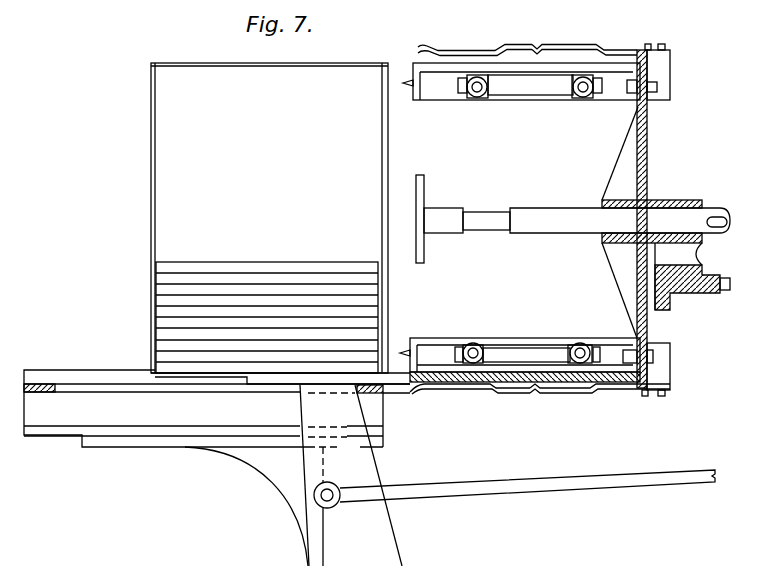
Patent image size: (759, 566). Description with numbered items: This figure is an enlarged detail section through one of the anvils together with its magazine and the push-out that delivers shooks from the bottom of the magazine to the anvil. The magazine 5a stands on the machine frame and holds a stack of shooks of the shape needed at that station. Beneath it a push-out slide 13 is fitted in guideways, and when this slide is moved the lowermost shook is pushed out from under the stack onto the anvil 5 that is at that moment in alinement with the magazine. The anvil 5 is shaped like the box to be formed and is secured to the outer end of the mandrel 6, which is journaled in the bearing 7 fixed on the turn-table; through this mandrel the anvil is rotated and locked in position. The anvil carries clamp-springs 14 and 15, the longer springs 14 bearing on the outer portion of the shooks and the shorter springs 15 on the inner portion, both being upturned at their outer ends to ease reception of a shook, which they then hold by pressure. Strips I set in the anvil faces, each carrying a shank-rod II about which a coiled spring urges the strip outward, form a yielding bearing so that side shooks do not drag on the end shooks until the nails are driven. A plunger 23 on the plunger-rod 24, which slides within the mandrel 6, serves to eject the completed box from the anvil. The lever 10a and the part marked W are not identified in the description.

The magazine 5a is at (258, 218).
The push-out slide 13 is at (270, 380).
The lever 10a is at (590, 485).
The anvil 5 is at (647, 325).
The clamp-spring 14 is at (475, 45).
The clamp-spring 15 is at (570, 47).
The strip I is at (530, 87).
The shank-rod II is at (475, 95).
The bracket W is at (588, 46).
The plunger 23 is at (423, 200).
The plunger-rod 24 is at (488, 215).
The mandrel 6 is at (562, 228).
The bearing 7 is at (683, 200).